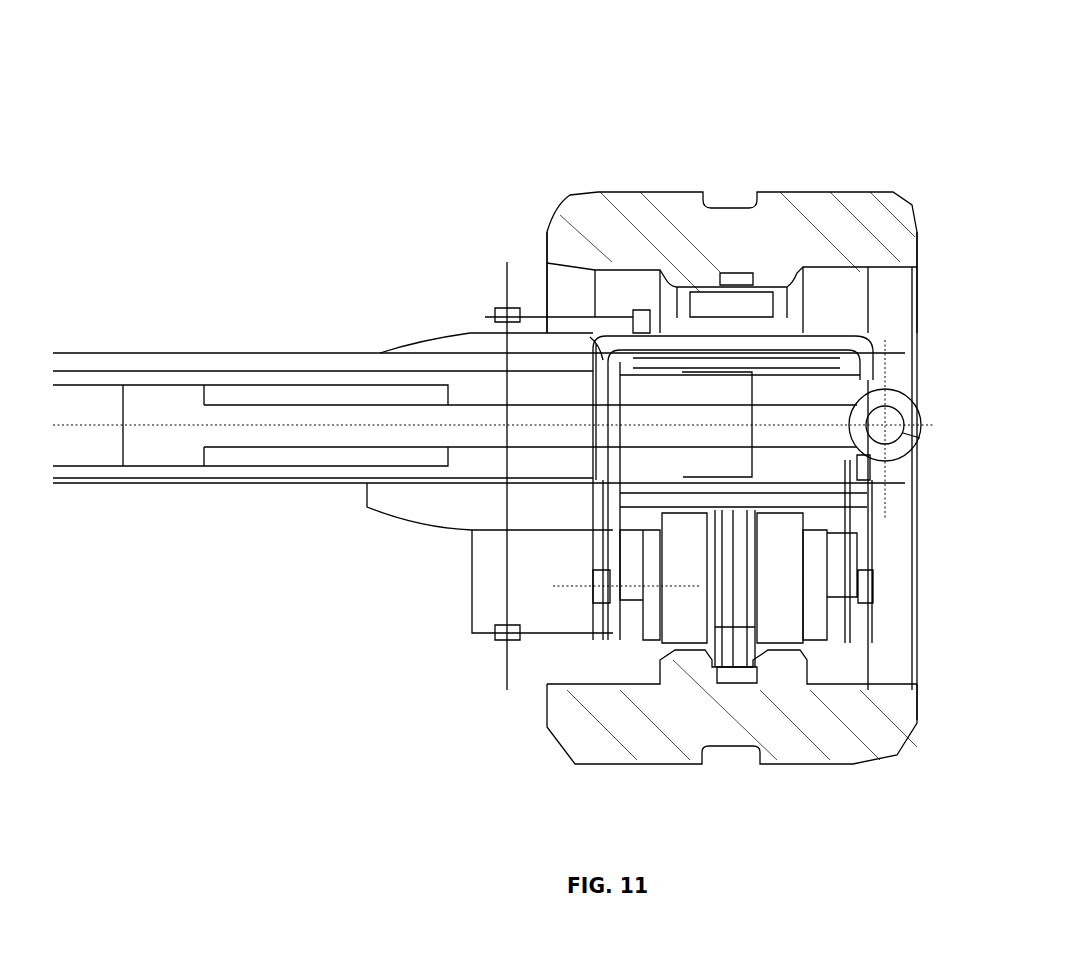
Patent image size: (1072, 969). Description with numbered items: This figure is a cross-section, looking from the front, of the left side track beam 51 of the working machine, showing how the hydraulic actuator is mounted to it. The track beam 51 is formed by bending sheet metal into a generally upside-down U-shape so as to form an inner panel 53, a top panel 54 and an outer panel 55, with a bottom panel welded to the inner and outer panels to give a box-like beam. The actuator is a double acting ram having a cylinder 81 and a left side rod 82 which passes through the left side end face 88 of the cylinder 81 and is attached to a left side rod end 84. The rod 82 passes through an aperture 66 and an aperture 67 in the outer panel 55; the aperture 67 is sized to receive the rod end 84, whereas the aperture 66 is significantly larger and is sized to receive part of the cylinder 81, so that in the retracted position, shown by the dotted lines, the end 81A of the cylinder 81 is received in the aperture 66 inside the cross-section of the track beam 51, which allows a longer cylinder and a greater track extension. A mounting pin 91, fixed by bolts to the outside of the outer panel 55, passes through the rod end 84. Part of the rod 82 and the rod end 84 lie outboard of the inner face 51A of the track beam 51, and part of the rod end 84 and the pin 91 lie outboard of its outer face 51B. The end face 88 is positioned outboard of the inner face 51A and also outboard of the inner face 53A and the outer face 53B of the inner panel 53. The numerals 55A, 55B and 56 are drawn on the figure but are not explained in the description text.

The left side track beam 51 is at (917, 171).
The inner face of the track beam 51A is at (593, 495).
The outer face of the track beam 51B is at (873, 366).
The inner panel 53 is at (593, 505).
The inner face of the inner panel 53A is at (600, 462).
The outer face of the inner panel 53B is at (620, 460).
The top panel 54 is at (785, 342).
The outer panel 55 is at (852, 335).
The cover side wall 55A is at (850, 462).
The cover flange 55B is at (870, 502).
The mounting bolt 56 is at (820, 508).
The aperture 66 is at (616, 387).
The aperture 67 is at (863, 468).
The cylinder 81 is at (286, 372).
The end of cylinder 81A is at (512, 392).
The left side rod 82 is at (292, 435).
The left side rod end 84 is at (917, 435).
The left side end face of cylinder 88 is at (528, 388).
The mounting pin 91 is at (898, 423).